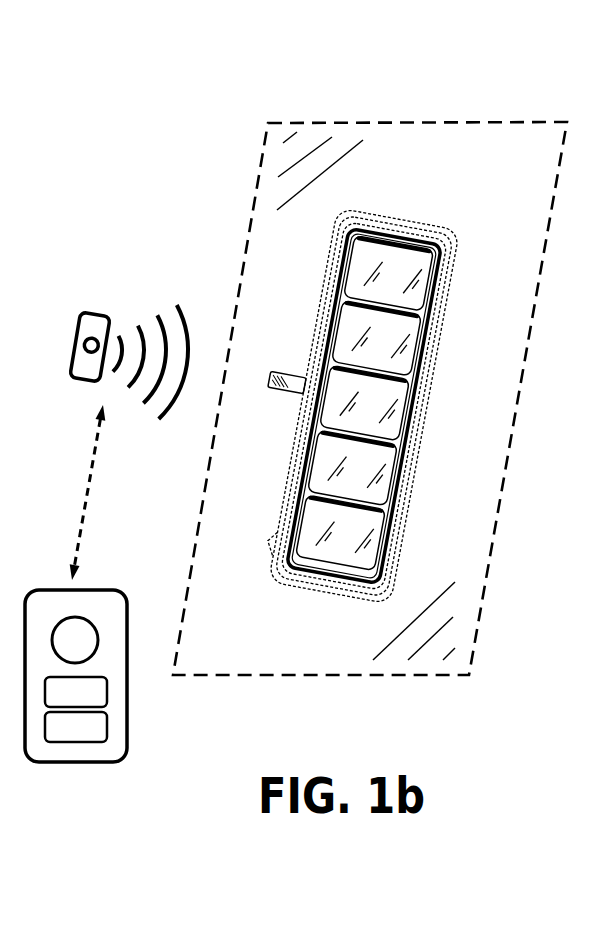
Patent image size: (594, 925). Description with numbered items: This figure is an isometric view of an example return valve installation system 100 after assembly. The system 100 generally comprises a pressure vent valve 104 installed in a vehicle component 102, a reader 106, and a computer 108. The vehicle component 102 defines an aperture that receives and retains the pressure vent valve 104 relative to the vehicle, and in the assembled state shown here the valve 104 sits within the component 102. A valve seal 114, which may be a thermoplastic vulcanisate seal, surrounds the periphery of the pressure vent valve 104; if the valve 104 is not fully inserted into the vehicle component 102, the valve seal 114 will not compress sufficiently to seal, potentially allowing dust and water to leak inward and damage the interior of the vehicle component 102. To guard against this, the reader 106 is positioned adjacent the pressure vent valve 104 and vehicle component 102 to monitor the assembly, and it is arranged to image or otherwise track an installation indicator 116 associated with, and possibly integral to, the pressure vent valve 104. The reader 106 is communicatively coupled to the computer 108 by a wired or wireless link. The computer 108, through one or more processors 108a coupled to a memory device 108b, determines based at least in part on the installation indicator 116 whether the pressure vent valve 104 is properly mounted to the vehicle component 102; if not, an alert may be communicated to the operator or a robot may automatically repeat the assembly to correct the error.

The return valve installation system 100 is at (568, 55).
The vehicle component 102 is at (440, 121).
The pressure vent valve 104 is at (404, 208).
The reader 106 is at (95, 312).
The computer 108 is at (80, 649).
The processor 108a is at (76, 692).
The memory device 108b is at (76, 727).
The valve seal 114 is at (452, 236).
The installation indicator 116 is at (283, 351).